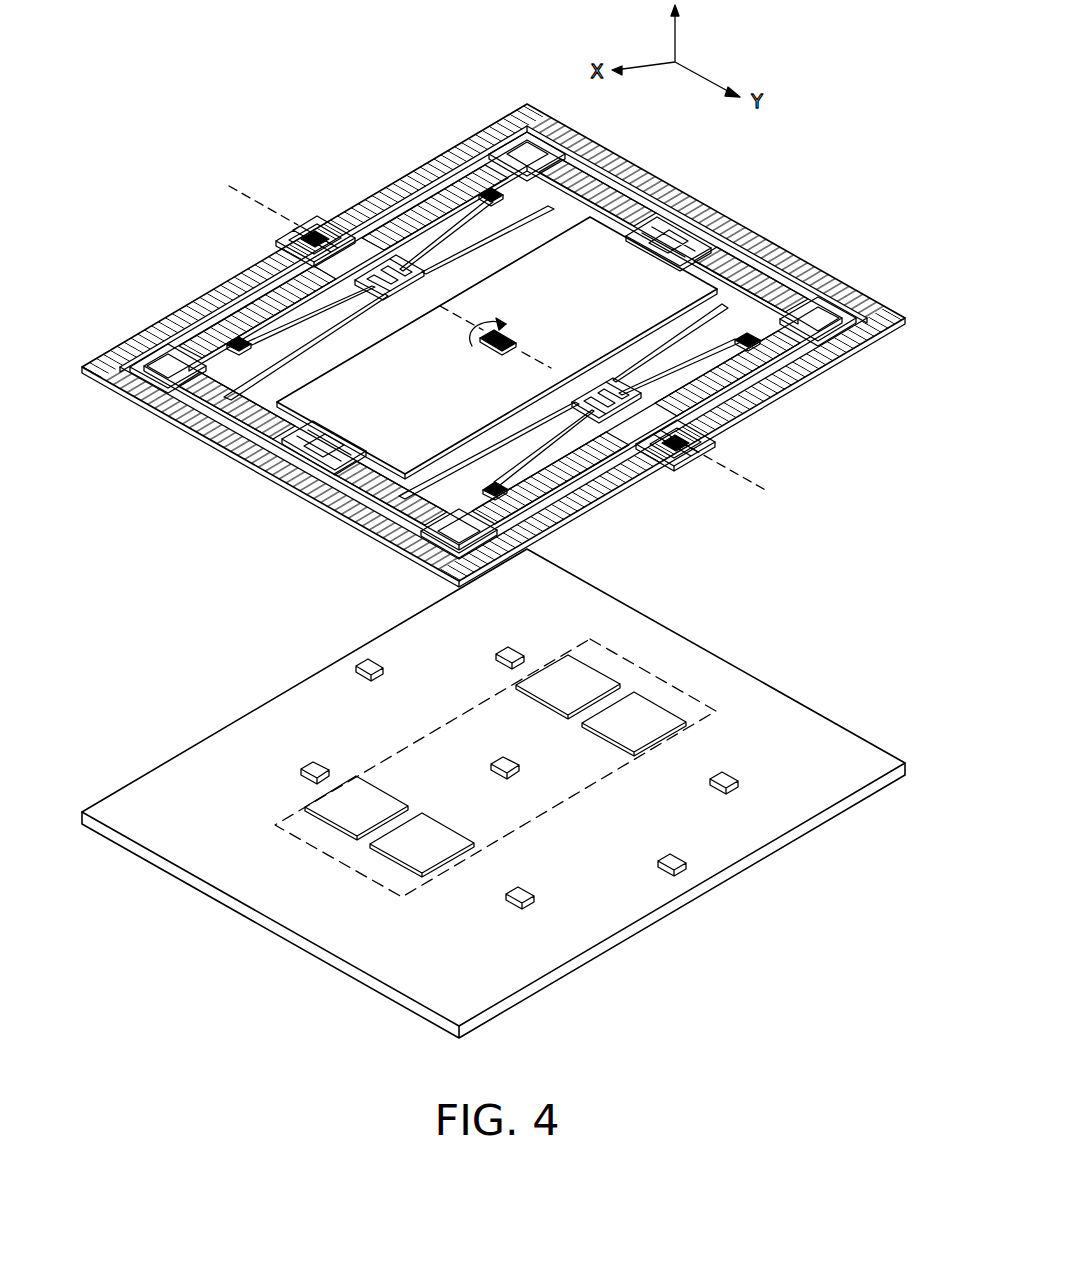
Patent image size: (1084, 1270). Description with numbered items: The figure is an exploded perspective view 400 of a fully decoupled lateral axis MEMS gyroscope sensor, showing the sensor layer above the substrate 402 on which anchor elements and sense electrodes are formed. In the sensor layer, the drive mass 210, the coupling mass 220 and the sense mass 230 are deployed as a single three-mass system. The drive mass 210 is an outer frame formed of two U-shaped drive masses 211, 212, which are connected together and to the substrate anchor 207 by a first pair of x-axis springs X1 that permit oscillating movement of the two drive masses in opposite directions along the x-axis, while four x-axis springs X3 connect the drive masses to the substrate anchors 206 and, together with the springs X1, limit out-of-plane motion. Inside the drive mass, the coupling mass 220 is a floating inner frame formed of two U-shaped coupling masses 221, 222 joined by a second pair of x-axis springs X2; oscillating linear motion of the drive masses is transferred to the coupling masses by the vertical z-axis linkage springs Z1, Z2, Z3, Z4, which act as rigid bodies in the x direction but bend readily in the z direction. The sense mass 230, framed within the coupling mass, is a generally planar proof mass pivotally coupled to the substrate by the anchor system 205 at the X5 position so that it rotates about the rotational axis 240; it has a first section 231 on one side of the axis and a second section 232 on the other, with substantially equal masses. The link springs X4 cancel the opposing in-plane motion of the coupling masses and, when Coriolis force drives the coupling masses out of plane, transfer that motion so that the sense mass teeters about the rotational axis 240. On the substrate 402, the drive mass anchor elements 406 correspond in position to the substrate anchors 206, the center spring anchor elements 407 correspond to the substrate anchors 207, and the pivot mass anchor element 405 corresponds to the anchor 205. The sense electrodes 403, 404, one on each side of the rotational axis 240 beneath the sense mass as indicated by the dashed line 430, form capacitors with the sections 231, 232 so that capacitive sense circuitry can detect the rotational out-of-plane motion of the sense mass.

The exploded perspective view 400 is at (225, 70).
The drive mass 210 is at (752, 218).
The drive mass 211 is at (180, 310).
The drive mass 212 is at (447, 152).
The coupling mass 220 is at (679, 200).
The coupling mass 221 is at (282, 378).
The coupling mass 222 is at (537, 212).
The sense mass 230 is at (346, 352).
The first section 231 is at (370, 420).
The second section 232 is at (579, 302).
The rotational axis 240 is at (238, 190).
The anchor system 205 is at (516, 340).
The substrate anchor 206 is at (478, 197).
The substrate anchor 207 is at (274, 243).
The x-axis springs X1 is at (305, 216).
The x-axis springs X2 is at (383, 256).
The x-axis springs X3 is at (504, 504).
The link springs X4 is at (630, 218).
The X5 substrate anchor X5 is at (500, 349).
The linkage spring Z1 is at (168, 368).
The linkage spring Z2 is at (527, 156).
The linkage spring Z3 is at (459, 532).
The linkage spring Z4 is at (818, 321).
The substrate 402 is at (443, 980).
The sense electrode 403 is at (338, 815).
The sense electrode 404 is at (553, 695).
The pivot mass anchor element 405 is at (500, 760).
The drive mass anchor elements 406 is at (505, 652).
The center spring anchor elements 407 is at (365, 672).
The dashed line 430 is at (413, 735).